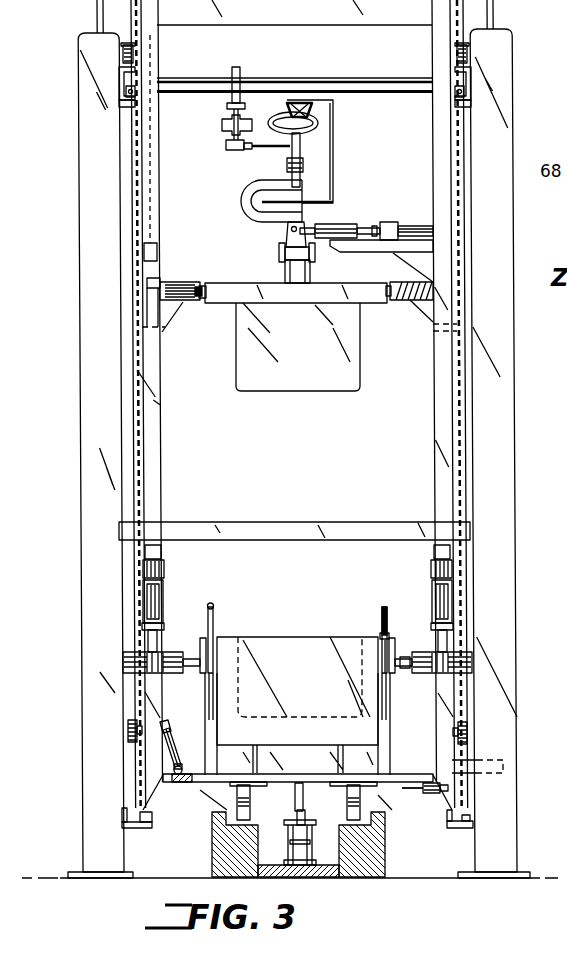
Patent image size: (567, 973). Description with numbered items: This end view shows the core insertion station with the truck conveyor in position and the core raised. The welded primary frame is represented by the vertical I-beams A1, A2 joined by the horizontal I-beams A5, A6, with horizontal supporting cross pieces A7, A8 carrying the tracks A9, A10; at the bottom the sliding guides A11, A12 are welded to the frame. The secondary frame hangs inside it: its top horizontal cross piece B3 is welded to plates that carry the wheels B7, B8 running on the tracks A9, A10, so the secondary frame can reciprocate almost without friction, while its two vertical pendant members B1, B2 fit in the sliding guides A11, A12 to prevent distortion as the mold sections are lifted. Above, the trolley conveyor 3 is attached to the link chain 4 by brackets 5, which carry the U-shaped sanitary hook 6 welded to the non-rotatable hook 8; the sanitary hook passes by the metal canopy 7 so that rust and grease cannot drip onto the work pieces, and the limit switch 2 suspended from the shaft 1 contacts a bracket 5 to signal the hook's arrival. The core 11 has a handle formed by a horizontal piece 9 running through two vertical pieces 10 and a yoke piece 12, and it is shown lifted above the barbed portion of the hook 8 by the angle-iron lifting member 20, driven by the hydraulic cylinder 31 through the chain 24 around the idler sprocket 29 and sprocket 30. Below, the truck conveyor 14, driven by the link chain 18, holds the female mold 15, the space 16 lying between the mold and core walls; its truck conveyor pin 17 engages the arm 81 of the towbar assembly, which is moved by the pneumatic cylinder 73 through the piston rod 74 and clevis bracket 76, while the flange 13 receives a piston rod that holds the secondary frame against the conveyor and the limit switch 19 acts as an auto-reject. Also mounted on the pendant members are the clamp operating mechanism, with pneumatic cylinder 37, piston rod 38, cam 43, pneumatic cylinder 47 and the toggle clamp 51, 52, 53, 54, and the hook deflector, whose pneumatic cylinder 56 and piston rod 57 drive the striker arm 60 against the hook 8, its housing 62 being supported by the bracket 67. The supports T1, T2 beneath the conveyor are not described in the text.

The shaft 1 is at (338, 80).
The limit switch 2 is at (233, 150).
The trolley conveyor 3 is at (287, 108).
The link chain 4 is at (305, 152).
The bracket 5 is at (303, 165).
The sanitary hook 6 is at (262, 198).
The metal canopy 7 is at (333, 122).
The non-rotatable hook 8 is at (290, 240).
The horizontal piece 9 is at (282, 250).
The vertical pieces 10 is at (283, 275).
The core 11 is at (302, 353).
The yoke piece 12 is at (205, 283).
The flange 13 is at (503, 773).
The truck conveyor 14 is at (392, 748).
The female mold 15 is at (222, 642).
The space 16 is at (247, 670).
The truck conveyor pin 17 is at (200, 783).
The link chain 18 is at (315, 838).
The limit switch 19 is at (430, 795).
The lifting member 20 is at (188, 300).
The chain 24 is at (132, 697).
The idler sprocket 29 is at (130, 730).
The sprocket 30 is at (135, 97).
The hydraulic cylinder 31 is at (151, 190).
The pneumatic cylinder 37 is at (452, 600).
The piston rod 38 is at (447, 642).
The cam 43 is at (397, 656).
The pneumatic cylinder 47 is at (473, 663).
The handle of toggle clamp 51 is at (405, 657).
The toggle clamp 52 is at (377, 656).
The toggle clamp 53 is at (393, 630).
The toggle clamp 54 is at (386, 608).
The pneumatic cylinder 56 is at (413, 224).
The piston rod 57 is at (375, 228).
The striker arm 60 is at (330, 226).
The housing 62 is at (358, 250).
The bracket 67 is at (405, 262).
The pneumatic cylinder 73 is at (165, 724).
The piston rod 74 is at (170, 737).
The clevis bracket 76 is at (178, 762).
The arm of towbar assembly 81 is at (180, 783).
The vertical I-beam A1 is at (105, 330).
The vertical I-beam A2 is at (499, 318).
The horizontal I-beam A5 is at (97, 12).
The horizontal I-beam A6 is at (493, 8).
The horizontal supporting cross piece A7 is at (471, 90).
The horizontal supporting cross piece A8 is at (118, 89).
The track A9 is at (471, 64).
The track A10 is at (118, 69).
The sliding guide A11 is at (467, 815).
The sliding guide A12 is at (122, 813).
The pendant member B1 is at (439, 498).
The pendant member B2 is at (150, 485).
The horizontal cross piece B3 is at (298, 19).
The wheels B7 is at (468, 56).
The wheels B8 is at (123, 52).
The left pedestal T1 is at (212, 840).
The right pedestal T2 is at (387, 843).